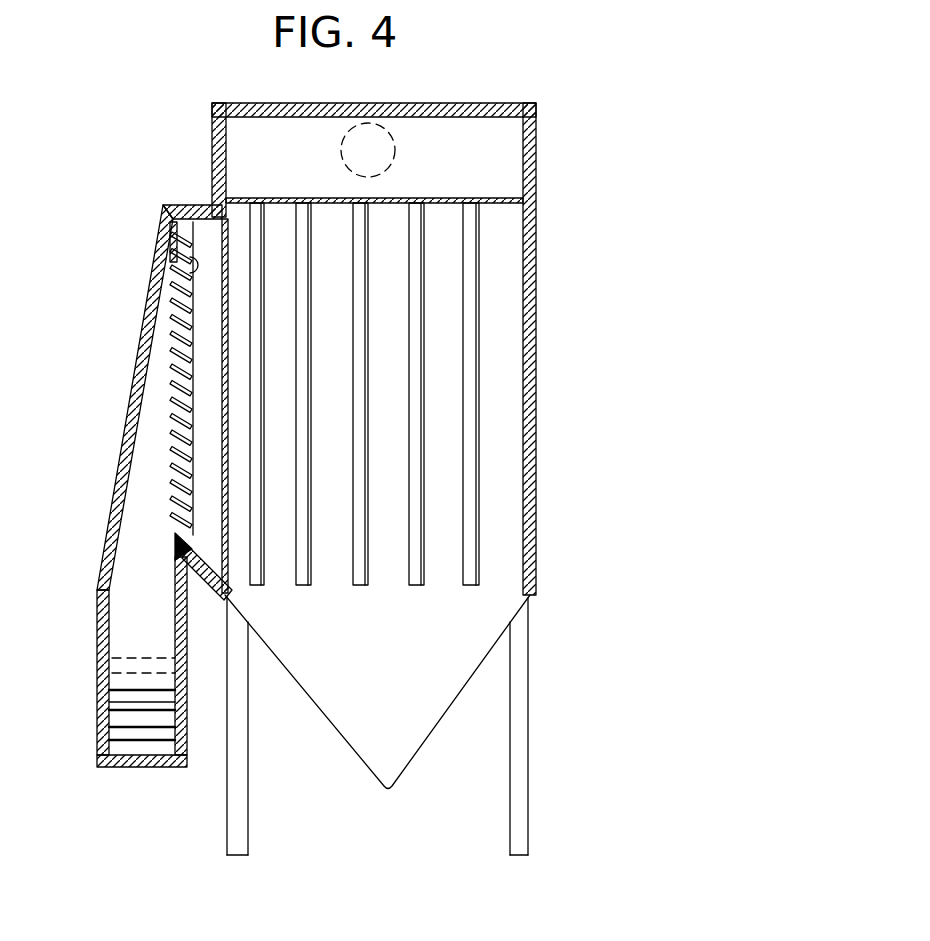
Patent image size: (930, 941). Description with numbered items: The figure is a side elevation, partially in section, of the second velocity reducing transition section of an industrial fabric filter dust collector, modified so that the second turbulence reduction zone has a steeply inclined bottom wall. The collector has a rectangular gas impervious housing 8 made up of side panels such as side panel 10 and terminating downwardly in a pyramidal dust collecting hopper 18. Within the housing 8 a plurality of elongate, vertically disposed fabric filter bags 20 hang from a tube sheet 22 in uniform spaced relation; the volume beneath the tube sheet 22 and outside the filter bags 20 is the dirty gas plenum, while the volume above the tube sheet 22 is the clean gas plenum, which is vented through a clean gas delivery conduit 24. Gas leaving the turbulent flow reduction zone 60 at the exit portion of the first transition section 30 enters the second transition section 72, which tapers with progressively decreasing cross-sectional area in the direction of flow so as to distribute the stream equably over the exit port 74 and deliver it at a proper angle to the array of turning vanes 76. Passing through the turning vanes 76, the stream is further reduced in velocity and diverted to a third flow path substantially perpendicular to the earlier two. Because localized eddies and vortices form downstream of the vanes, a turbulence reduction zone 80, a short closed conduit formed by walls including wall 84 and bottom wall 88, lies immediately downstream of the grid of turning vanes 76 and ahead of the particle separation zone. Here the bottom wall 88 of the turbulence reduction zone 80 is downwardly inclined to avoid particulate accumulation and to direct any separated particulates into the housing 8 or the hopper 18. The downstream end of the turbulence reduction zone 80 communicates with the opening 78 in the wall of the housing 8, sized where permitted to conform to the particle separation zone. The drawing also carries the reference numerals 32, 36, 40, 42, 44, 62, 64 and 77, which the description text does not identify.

The housing 8 is at (550, 258).
The side panel 10 is at (535, 317).
The pyramidal dust collecting hopper 18 is at (353, 757).
The fabric filter bags 20 is at (482, 373).
The tube sheet 22 is at (497, 197).
The clean gas delivery conduit 24 is at (341, 148).
The first transition section 30 is at (118, 697).
The bottom plate 32 is at (160, 745).
The screen plate 36 is at (122, 681).
The baffle plates 40 is at (160, 708).
The collected dust 42 is at (127, 658).
The bottom wall 44 is at (143, 745).
The turbulent flow reduction zone 60 is at (163, 636).
The inner wall 62 is at (187, 590).
The outer wall 64 is at (97, 603).
The second transition section 72 is at (113, 467).
The exit port 74 is at (172, 247).
The array of turning vanes 76 is at (177, 432).
The louvers 77 is at (172, 392).
The opening 78 is at (220, 297).
The turbulence reduction zone 80 is at (207, 352).
The wall 84 is at (207, 210).
The bottom wall 88 is at (215, 565).